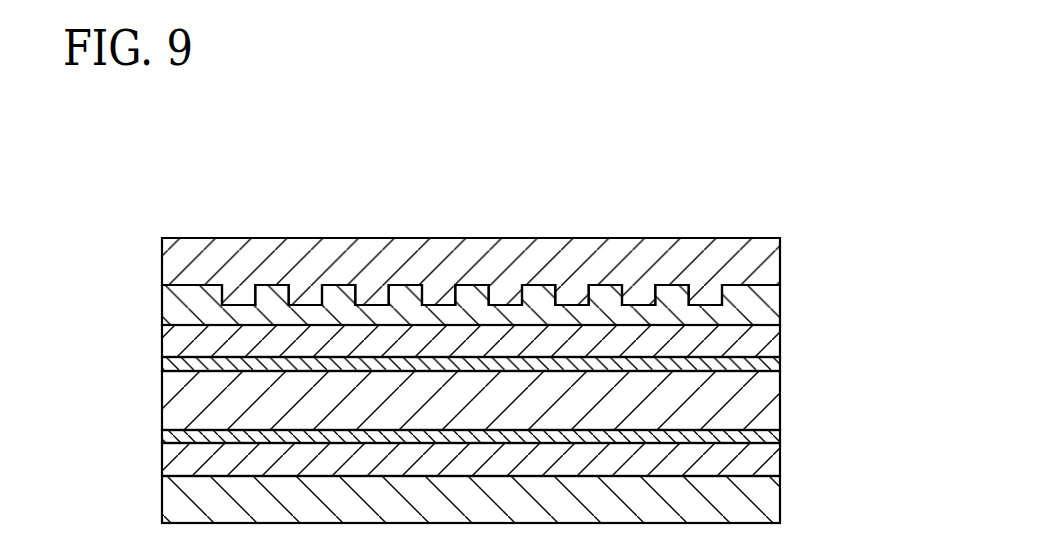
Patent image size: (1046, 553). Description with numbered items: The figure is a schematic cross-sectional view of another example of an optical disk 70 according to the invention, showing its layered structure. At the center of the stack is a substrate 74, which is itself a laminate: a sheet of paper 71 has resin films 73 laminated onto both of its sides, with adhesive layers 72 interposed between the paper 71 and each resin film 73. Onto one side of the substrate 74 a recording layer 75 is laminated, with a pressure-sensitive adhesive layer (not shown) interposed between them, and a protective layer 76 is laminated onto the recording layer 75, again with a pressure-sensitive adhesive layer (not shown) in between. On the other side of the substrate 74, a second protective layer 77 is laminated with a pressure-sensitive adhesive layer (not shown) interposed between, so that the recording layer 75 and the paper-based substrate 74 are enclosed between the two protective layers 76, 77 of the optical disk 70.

The optical disk 70 is at (542, 321).
The paper 71 is at (776, 402).
The adhesive layers 72 is at (776, 365).
The resin films 73 is at (776, 343).
The substrate 74 is at (542, 404).
The recording layer 75 is at (776, 310).
The protective layer 76 is at (776, 263).
The protective layer 77 is at (776, 498).